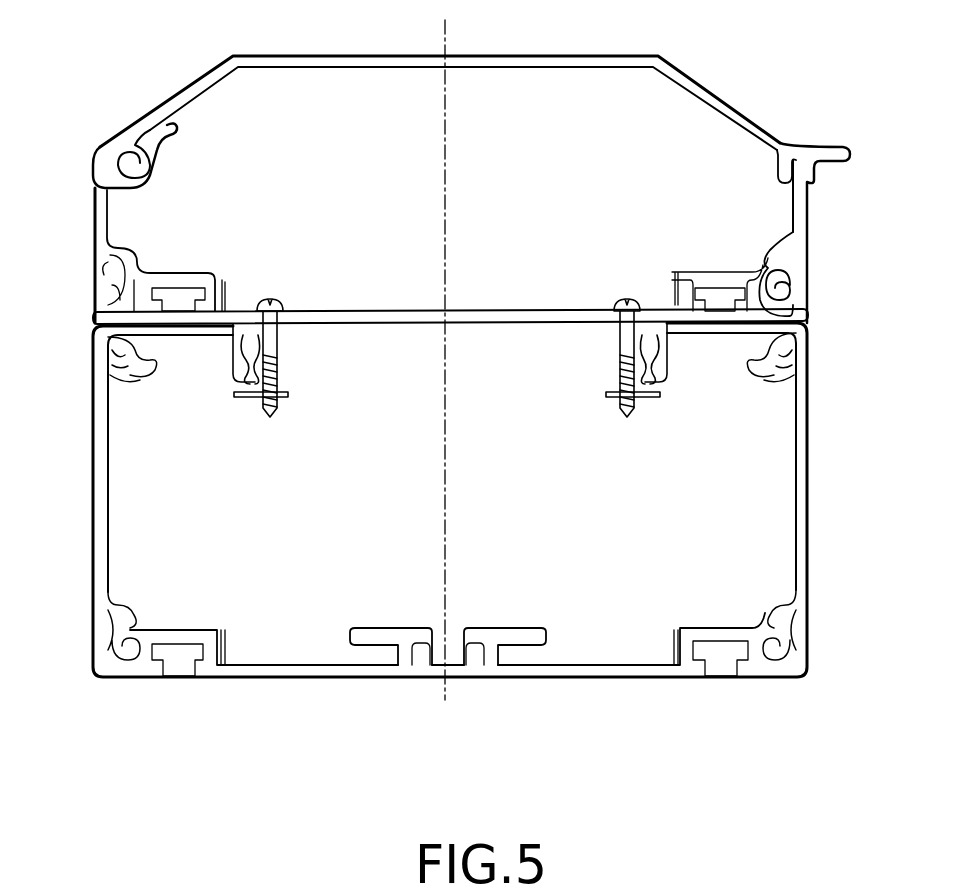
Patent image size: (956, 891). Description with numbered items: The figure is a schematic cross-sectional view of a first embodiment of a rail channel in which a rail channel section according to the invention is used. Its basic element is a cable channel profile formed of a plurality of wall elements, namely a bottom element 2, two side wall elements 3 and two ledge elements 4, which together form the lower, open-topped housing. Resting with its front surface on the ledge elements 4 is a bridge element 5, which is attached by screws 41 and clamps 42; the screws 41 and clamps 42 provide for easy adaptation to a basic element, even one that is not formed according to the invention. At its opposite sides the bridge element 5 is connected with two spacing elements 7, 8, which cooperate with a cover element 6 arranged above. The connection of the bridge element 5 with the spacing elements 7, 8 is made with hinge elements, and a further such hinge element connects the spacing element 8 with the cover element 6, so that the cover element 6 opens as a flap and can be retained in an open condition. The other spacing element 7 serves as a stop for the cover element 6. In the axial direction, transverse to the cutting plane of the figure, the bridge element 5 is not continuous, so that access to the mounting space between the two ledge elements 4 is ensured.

The bottom element 2 is at (382, 678).
The side wall element 3 is at (93, 374).
The ledge element 4 is at (190, 337).
The bridge element 5 is at (363, 308).
The cover element 6 is at (313, 55).
The spacing element 7 is at (808, 207).
The spacing element 8 is at (88, 195).
The screw 41 is at (278, 371).
The clamp 42 is at (255, 398).